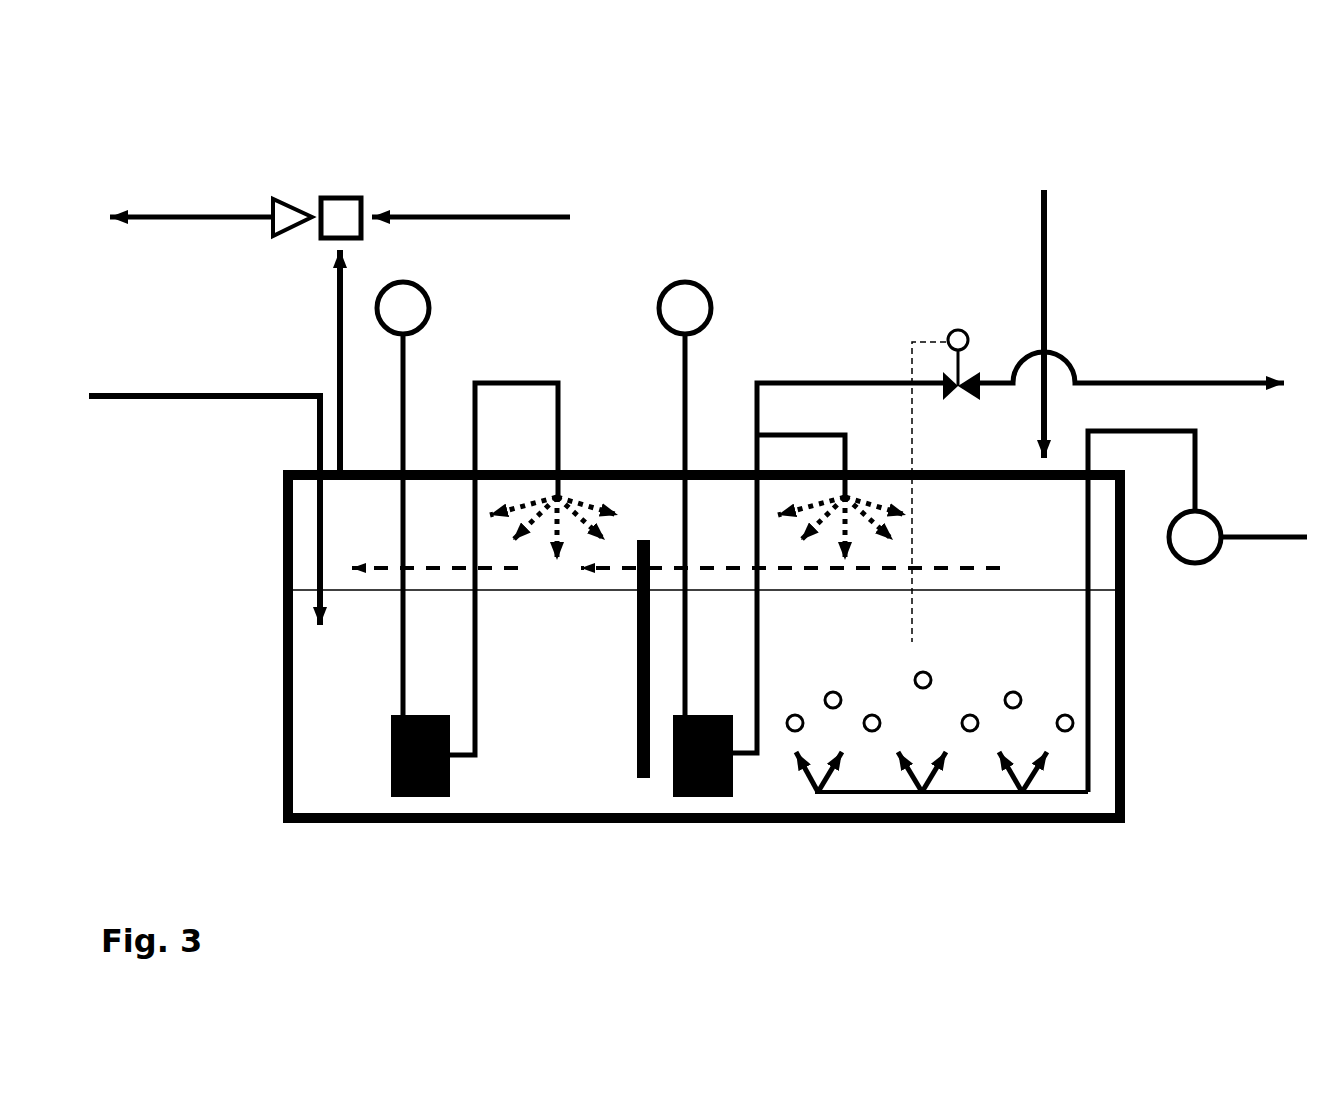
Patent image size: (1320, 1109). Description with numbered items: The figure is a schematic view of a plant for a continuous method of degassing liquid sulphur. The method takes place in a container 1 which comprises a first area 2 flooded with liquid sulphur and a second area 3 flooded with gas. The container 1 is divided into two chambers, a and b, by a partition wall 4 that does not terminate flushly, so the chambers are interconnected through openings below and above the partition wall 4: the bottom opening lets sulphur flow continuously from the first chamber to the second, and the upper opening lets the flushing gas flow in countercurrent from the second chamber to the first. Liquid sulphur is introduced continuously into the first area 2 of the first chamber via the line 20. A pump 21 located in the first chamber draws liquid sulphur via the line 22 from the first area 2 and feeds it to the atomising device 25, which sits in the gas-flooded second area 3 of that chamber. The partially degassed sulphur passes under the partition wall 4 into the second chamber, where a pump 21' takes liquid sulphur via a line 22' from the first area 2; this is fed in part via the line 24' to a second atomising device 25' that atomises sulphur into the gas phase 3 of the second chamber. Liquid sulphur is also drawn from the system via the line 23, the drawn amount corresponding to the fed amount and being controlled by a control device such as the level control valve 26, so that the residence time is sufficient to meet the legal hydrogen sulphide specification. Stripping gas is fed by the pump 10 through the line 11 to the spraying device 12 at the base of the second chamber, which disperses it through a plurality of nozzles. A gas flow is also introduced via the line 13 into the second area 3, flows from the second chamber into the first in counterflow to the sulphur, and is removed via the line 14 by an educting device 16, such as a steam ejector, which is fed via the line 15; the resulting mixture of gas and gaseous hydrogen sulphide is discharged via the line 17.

The container 1 is at (552, 823).
The first area 2 is at (374, 672).
The second area 3 is at (1000, 568).
The partition wall 4 is at (645, 778).
The pump 10 is at (1220, 510).
The line 11 is at (1088, 750).
The spraying device 12 is at (922, 792).
The line 13 is at (1046, 217).
The line 14 is at (337, 311).
The line 15 is at (493, 215).
The educting device 16 is at (339, 196).
The line 17 is at (175, 220).
The line 20 is at (109, 400).
The pump 21 is at (413, 596).
The pump 21' is at (696, 596).
The line 22 is at (504, 513).
The line 22' is at (818, 564).
The line 23 is at (1235, 381).
The line 24' is at (801, 398).
The atomising device 25 is at (568, 471).
The second atomising device 25' is at (842, 474).
The level control valve 26 is at (963, 328).